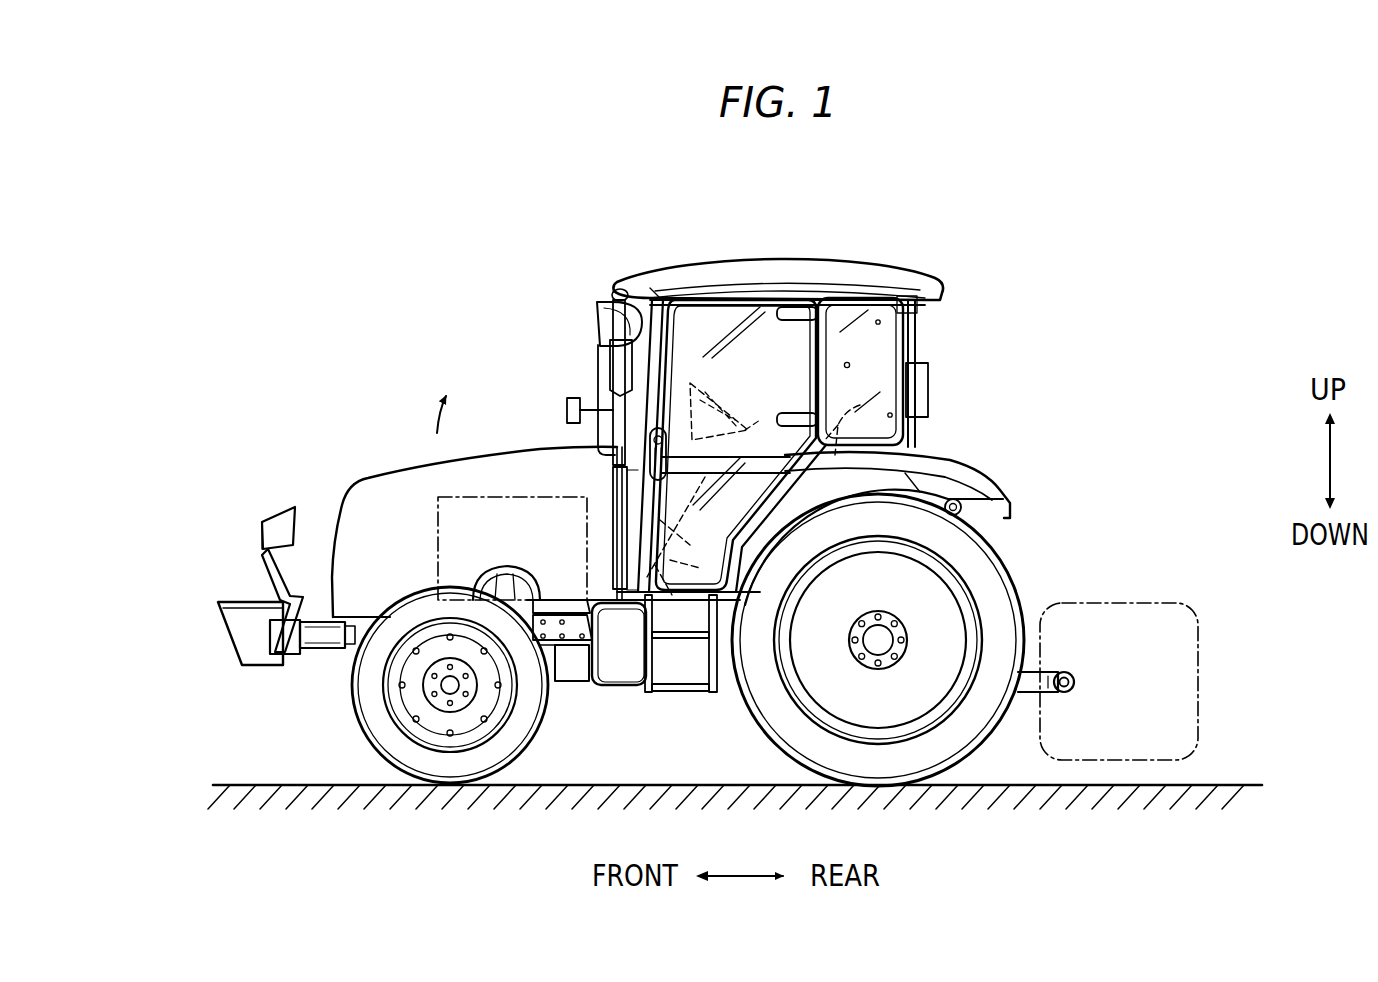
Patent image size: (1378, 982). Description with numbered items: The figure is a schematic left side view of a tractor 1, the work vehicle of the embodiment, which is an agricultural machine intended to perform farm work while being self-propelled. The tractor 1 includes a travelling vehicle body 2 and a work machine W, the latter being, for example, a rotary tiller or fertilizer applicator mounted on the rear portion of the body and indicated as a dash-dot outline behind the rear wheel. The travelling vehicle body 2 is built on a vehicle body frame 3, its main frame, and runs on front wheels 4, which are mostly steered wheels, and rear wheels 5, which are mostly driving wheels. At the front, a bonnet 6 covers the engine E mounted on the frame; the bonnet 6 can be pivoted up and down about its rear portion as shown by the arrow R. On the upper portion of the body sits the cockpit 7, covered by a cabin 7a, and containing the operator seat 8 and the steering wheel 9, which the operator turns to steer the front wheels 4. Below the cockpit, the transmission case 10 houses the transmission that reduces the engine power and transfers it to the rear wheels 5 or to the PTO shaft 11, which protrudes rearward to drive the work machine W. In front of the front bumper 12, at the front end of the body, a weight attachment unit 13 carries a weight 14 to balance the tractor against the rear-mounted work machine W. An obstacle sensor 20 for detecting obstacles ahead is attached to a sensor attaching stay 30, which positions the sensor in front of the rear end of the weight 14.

The work vehicle (tractor) 1 is at (1066, 178).
The travelling vehicle body 2 is at (961, 268).
The vehicle body frame 3 is at (573, 684).
The front wheels 4 is at (433, 778).
The rear wheels 5 is at (978, 722).
The bonnet 6 is at (378, 478).
The cockpit 7 is at (834, 312).
The cabin 7a is at (766, 258).
The operator seat 8 is at (860, 403).
The steering wheel 9 is at (742, 405).
The transmission case 10 is at (624, 666).
The PTO shaft 11 is at (1038, 670).
The front bumper 12 is at (328, 655).
The weight attachment unit 13 is at (290, 670).
The weight 14 is at (228, 653).
The obstacle sensor 20 is at (271, 504).
The sensor attaching stay 30 is at (297, 547).
The engine E is at (503, 497).
The arrow (bonnet pivot direction) R is at (440, 408).
The work machine W is at (1098, 603).